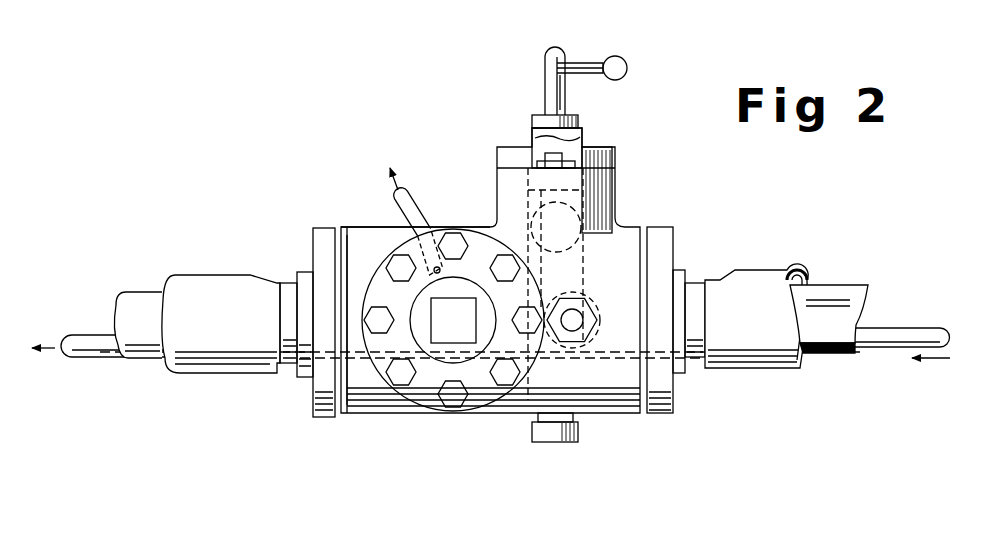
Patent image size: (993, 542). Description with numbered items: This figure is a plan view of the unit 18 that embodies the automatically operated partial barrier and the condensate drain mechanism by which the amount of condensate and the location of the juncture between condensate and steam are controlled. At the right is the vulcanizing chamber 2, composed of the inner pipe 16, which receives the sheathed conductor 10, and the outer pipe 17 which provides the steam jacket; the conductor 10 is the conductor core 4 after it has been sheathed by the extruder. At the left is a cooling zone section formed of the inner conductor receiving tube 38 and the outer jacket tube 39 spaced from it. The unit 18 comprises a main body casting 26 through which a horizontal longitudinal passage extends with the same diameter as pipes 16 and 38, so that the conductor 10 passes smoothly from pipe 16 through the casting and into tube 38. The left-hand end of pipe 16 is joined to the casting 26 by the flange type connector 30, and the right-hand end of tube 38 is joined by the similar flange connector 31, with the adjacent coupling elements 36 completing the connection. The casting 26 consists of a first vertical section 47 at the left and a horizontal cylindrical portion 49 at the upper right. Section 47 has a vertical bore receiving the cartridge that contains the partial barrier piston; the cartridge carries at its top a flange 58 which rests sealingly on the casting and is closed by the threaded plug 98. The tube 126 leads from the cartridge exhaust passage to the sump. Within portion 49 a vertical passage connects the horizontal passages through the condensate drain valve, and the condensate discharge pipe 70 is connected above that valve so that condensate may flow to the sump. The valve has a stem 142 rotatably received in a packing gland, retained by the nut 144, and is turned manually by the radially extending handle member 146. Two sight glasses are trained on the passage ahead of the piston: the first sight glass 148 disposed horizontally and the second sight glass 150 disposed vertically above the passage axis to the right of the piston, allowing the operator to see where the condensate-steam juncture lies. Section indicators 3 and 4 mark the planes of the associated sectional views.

The vulcanizing chamber 2 is at (812, 262).
The section line 3- 3 is at (97, 326).
The conductor core 4 is at (585, 22).
The sheathed conductor 10 is at (95, 360).
The inner pipe 16 is at (845, 300).
The outer pipe 17 is at (760, 270).
The unit 18 is at (640, 214).
The main body casting 26 is at (493, 226).
The flange type connector 30 is at (665, 250).
The flange connector 31 is at (322, 240).
The coupling adapter 36 is at (222, 262).
The inner conductor receiving tube 38 is at (140, 302).
The outer jacket tube 39 is at (192, 285).
The vertical section 47 is at (376, 250).
The horizontal cylindrical portion 49 is at (592, 192).
The flange 58 is at (492, 392).
The condensate discharge pipe 70 is at (583, 148).
The plug 98 is at (438, 365).
The tube 126 is at (413, 212).
The valve stem 142 is at (550, 88).
The nut 144 is at (532, 134).
The handle member 146 is at (600, 66).
The first sight glass 148 is at (580, 440).
The second sight glass 150 is at (585, 305).